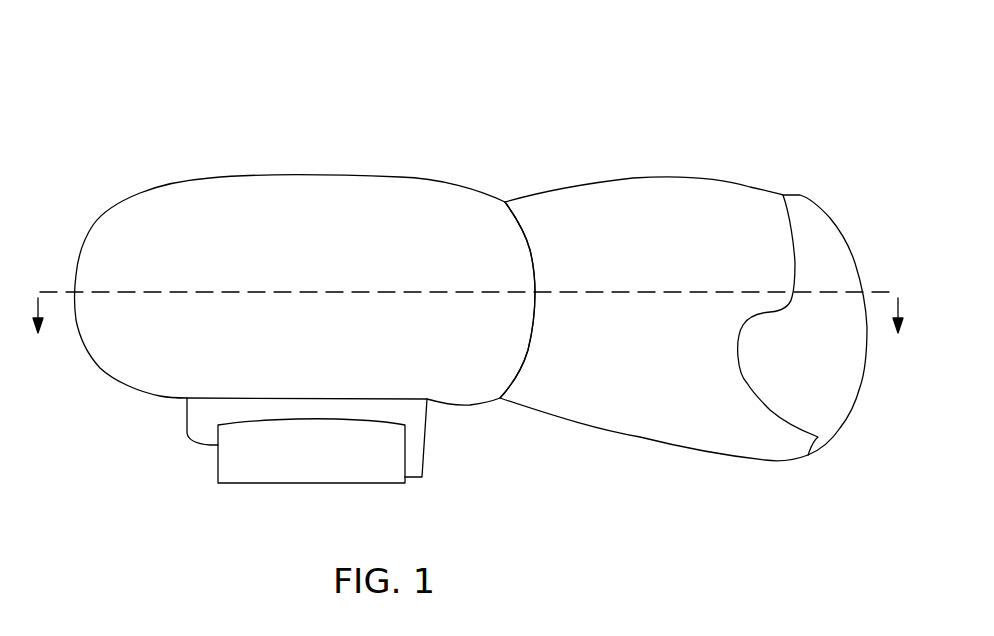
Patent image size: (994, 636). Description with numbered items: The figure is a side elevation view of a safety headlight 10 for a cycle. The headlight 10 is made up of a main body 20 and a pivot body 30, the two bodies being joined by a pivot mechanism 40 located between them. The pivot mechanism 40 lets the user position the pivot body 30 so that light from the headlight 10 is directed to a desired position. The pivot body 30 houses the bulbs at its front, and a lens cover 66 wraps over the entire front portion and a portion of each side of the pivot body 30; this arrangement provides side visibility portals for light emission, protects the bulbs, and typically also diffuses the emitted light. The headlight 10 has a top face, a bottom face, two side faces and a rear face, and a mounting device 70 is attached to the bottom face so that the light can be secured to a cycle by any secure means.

The safety headlight 10 is at (473, 243).
The main body 20 is at (297, 172).
The pivot body 30 is at (643, 212).
The pivot mechanism 40 is at (527, 235).
The lens cover 66 is at (813, 227).
The mounting device 70 is at (218, 465).